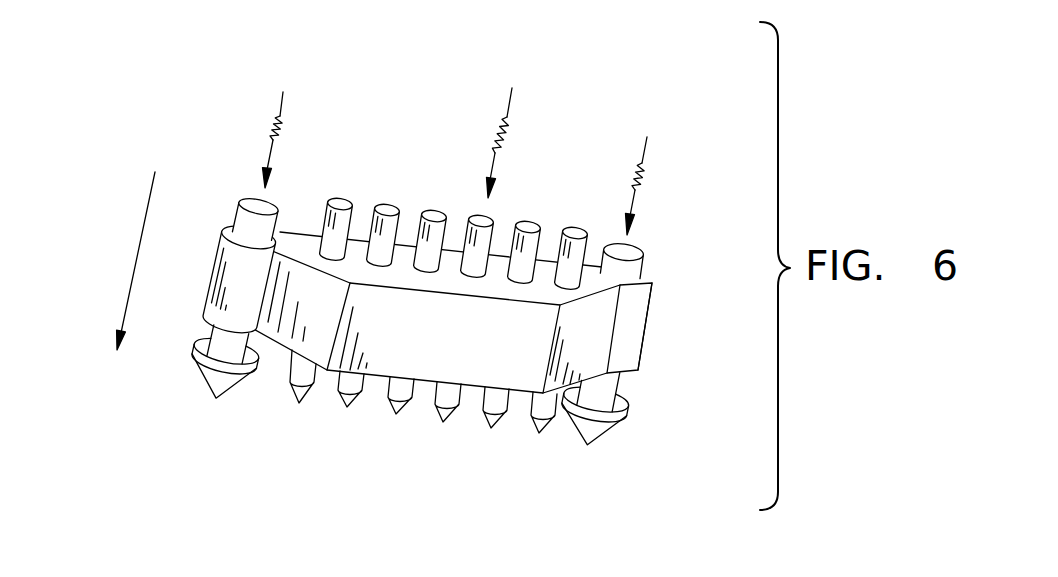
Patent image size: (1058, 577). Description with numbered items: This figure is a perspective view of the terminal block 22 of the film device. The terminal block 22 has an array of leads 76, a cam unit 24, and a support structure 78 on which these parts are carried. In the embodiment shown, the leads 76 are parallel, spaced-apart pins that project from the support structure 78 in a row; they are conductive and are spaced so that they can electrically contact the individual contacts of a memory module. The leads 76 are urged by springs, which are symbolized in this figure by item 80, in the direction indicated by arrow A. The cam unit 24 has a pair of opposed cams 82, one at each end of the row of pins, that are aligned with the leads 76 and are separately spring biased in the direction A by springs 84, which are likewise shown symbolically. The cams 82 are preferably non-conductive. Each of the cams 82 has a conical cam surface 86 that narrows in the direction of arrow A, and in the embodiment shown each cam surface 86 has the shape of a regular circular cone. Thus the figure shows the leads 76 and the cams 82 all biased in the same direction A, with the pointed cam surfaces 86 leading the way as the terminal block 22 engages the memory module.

The terminal block 22 is at (653, 99).
The cam unit 24 is at (237, 215).
The leads 76 is at (340, 203).
The support structure 78 is at (608, 324).
The springs 80 is at (510, 100).
The cams 82 is at (642, 266).
The springs 84 is at (281, 103).
The conical cam surface 86 is at (203, 380).
The direction arrow A is at (140, 251).